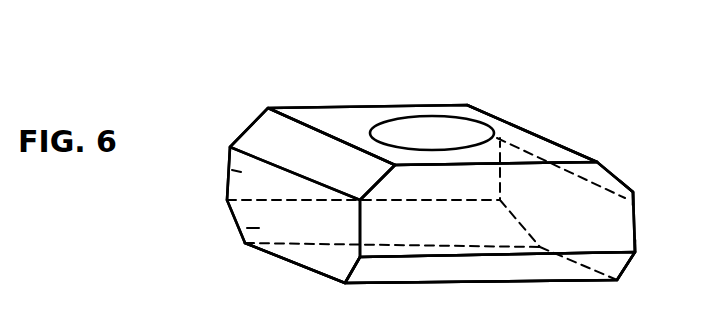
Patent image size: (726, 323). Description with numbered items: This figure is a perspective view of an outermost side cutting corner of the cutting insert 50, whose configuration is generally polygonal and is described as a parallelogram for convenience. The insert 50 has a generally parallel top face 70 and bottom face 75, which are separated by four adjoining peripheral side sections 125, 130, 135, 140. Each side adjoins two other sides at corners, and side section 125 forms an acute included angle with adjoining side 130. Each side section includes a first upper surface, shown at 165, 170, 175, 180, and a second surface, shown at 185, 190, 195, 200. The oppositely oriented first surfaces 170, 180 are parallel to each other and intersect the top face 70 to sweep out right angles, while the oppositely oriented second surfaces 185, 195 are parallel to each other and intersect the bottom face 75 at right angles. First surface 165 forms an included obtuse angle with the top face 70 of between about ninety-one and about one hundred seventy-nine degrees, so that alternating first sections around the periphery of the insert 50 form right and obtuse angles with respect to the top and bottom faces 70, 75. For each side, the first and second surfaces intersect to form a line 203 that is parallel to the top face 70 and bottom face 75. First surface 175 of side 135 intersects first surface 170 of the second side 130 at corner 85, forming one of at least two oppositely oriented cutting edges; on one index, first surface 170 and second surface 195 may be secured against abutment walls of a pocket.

The insert 50 is at (448, 78).
The top face 70 is at (508, 124).
The bottom face 75 is at (388, 268).
The corner 85 is at (360, 199).
The side section 125 is at (626, 162).
The second side 130 is at (516, 219).
The side 135 is at (283, 256).
The side section 140 is at (228, 168).
The first upper surface 165 is at (553, 143).
The first surface 170 is at (622, 218).
The first surface 175 is at (258, 127).
The first surface 180 is at (347, 117).
The second surface 185 is at (632, 192).
The second surface 190 is at (582, 279).
The second surface 195 is at (328, 263).
The second surface 200 is at (244, 232).
The line 203 is at (620, 247).